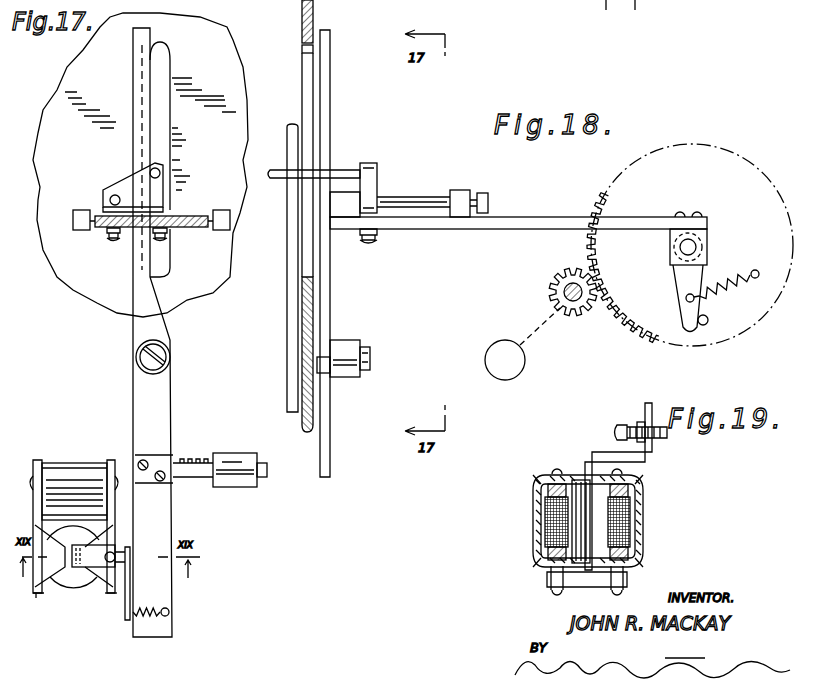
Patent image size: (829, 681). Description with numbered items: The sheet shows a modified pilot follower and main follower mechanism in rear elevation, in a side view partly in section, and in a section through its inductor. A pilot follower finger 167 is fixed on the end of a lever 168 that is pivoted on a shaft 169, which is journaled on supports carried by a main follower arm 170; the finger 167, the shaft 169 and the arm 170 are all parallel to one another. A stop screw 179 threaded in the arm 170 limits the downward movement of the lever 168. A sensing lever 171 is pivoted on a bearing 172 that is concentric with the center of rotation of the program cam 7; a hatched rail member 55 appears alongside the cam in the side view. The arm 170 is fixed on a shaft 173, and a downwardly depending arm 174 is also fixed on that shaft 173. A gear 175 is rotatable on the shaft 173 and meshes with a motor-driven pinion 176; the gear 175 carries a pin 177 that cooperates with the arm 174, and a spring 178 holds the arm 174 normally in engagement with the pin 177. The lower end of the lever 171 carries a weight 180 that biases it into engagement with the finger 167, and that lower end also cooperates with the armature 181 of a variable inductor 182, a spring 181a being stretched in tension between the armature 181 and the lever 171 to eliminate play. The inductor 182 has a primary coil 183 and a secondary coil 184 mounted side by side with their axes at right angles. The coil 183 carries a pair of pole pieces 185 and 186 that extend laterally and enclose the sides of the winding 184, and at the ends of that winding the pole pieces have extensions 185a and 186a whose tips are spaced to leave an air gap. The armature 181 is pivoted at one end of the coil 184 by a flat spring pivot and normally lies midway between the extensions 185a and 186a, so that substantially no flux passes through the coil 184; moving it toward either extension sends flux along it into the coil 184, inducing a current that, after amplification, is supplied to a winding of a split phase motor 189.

In FIG. 18, the program cam 7 is at (287, 325).
In FIG. 18, the hatched rail member 55 is at (313, 16).
In FIG. 17, the pilot follower finger 167 is at (160, 170).
In FIG. 18, the pilot follower finger 167 is at (283, 172).
In FIG. 17, the lever 168 is at (128, 182).
In FIG. 18, the lever 168 is at (370, 160).
In FIG. 17, the shaft 169 is at (110, 197).
In FIG. 18, the shaft 169 is at (415, 197).
In FIG. 17, the main follower arm 170 is at (195, 215).
In FIG. 18, the main follower arm 170 is at (530, 217).
In FIG. 17, the sensing lever 171 is at (133, 405).
In FIG. 18, the sensing lever 171 is at (330, 312).
In FIG. 17, the bearing 172 is at (170, 353).
In FIG. 18, the bearing 172 is at (340, 340).
In FIG. 18, the shaft 173 is at (693, 245).
In FIG. 18, the downwardly depending arm 174 is at (684, 320).
In FIG. 18, the gear 175 is at (728, 160).
In FIG. 18, the motor-driven pinion 176 is at (577, 306).
In FIG. 18, the pin 177 is at (703, 326).
In FIG. 18, the spring 178 is at (728, 290).
In FIG. 17, the stop screw 179 is at (165, 240).
In FIG. 18, the stop screw 179 is at (373, 243).
In FIG. 17, the weight 180 is at (230, 487).
In FIG. 17, the armature 181 is at (95, 570).
In FIG. 19, the armature 181 is at (605, 452).
In FIG. 17, the spring 181a is at (145, 618).
In FIG. 17, the variable inductor 182 is at (27, 449).
In FIG. 17, the primary coil 183 is at (76, 460).
In FIG. 17, the secondary coil 184 is at (68, 580).
In FIG. 19, the secondary coil 184 is at (622, 512).
In FIG. 17, the pole piece 185 is at (45, 455).
In FIG. 19, the pole piece 185 is at (533, 530).
In FIG. 17, the pole piece extension 185a is at (32, 575).
In FIG. 19, the pole piece extension 185a is at (562, 470).
In FIG. 17, the pole piece 186 is at (103, 460).
In FIG. 19, the pole piece 186 is at (643, 525).
In FIG. 17, the pole piece extension 186a is at (78, 575).
In FIG. 19, the pole piece extension 186a is at (630, 478).
In FIG. 18, the split phase motor 189 is at (507, 380).